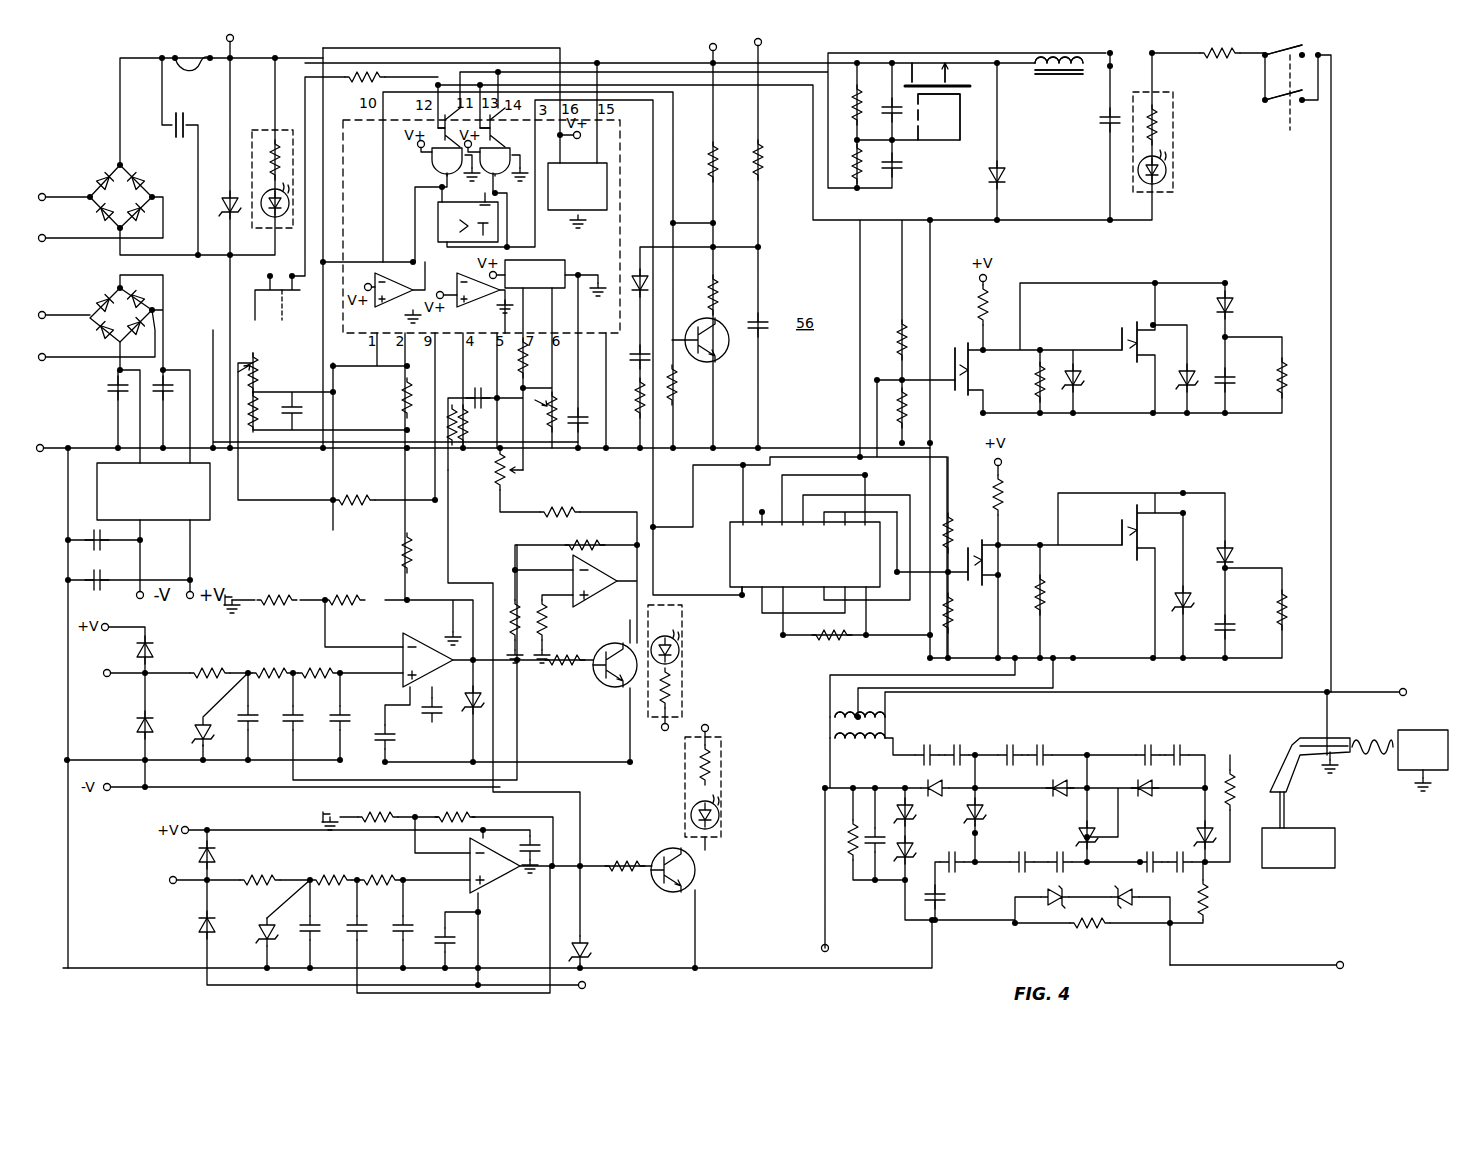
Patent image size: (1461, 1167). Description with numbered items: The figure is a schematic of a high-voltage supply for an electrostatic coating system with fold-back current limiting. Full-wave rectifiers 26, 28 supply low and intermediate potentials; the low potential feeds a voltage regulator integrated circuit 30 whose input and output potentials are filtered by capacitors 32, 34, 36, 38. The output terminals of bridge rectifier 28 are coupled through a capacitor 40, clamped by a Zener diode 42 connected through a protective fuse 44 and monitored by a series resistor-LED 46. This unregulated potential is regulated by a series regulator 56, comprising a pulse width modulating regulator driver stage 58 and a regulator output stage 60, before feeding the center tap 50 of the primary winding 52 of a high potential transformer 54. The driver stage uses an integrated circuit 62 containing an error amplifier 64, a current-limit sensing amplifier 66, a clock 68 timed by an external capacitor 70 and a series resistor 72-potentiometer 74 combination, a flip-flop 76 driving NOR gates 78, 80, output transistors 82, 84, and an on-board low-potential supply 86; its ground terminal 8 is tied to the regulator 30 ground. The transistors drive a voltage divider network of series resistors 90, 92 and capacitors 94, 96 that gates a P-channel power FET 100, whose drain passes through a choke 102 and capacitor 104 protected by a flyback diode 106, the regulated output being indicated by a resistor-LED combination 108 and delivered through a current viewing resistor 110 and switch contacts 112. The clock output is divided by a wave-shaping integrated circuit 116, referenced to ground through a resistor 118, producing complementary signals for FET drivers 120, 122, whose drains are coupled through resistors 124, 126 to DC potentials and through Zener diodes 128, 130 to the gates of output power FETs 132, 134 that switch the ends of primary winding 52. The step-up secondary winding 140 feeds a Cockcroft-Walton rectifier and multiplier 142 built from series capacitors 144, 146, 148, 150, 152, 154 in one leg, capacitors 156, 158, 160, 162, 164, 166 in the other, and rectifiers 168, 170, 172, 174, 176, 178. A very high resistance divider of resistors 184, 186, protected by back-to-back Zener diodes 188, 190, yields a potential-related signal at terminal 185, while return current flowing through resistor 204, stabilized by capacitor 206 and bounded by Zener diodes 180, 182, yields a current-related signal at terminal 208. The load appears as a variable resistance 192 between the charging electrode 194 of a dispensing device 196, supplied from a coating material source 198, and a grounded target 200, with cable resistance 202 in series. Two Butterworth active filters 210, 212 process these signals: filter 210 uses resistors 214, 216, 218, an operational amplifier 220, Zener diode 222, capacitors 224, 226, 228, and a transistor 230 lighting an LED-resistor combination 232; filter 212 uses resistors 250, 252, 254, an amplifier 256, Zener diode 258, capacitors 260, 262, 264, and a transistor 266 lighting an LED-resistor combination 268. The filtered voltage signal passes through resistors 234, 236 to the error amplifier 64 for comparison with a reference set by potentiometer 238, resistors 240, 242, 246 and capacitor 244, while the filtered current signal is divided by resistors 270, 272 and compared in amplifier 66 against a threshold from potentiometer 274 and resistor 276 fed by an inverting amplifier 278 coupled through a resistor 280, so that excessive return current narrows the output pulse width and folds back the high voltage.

The full-wave rectifier 26 is at (87, 294).
The full-wave bridge rectifier 28 is at (103, 153).
The voltage regulator integrated circuit 30 is at (227, 511).
The capacitor 32 is at (165, 400).
The capacitor 34 is at (110, 400).
The capacitor 36 is at (102, 580).
The capacitor 38 is at (90, 531).
The capacitor 40 is at (176, 138).
The Zener diode 42 is at (225, 195).
The protective fuse 44 is at (177, 54).
The series resistor-LED 46 is at (261, 122).
The center tap 50 is at (858, 704).
The primary winding 52 is at (883, 699).
The high potential transformer 54 is at (817, 719).
The series regulator 56 is at (758, 325).
The pulse width modulating regulator driver stage 58 is at (773, 266).
The regulator output stage 60 is at (868, 246).
The integrated circuit 62 is at (624, 182).
The error amplifier 64 is at (388, 280).
The current-limit sensing amplifier 66 is at (470, 280).
The oscillator or clock 68 is at (560, 272).
The time constant determining capacitor 70 is at (584, 409).
The series resistor 72 is at (533, 359).
The potentiometer 74 is at (562, 410).
The flip-flop 76 is at (436, 228).
The NOR gate 78 is at (440, 168).
The NOR gate 80 is at (510, 158).
The output transistor 82 is at (432, 120).
The output transistor 84 is at (505, 125).
The on-board low-potential supply 86 is at (577, 186).
The series resistor 90 is at (867, 98).
The series resistor 92 is at (867, 163).
The series capacitor 94 is at (888, 116).
The series capacitor 96 is at (897, 172).
The P-channel power FET 100 is at (940, 105).
The choke 102 is at (1053, 100).
The capacitor 104 is at (1100, 135).
The flyback diode 106 is at (1008, 167).
The series resistor-LED combination 108 is at (1186, 169).
The current viewing resistor 110 is at (1224, 62).
The switch contacts 112 is at (1271, 110).
The dividing and wave-shaping integrated circuit 116 is at (702, 570).
The resistor 118 is at (825, 651).
The power FET driver 120 is at (950, 325).
The power FET driver 122 is at (977, 525).
The resistor 124 is at (990, 312).
The resistor 126 is at (985, 477).
The voltage-regulating Zener diode 128 is at (1083, 384).
The voltage-regulating Zener diode 130 is at (1082, 606).
The output N-channel power FET 132 is at (1113, 323).
The output N-channel power FET 134 is at (1116, 520).
The step-up secondary winding 140 is at (846, 753).
The high potential rectifier and multiplier 142 is at (1095, 737).
The series capacitor 144 is at (926, 744).
The series capacitor 146 is at (962, 744).
The series capacitor 148 is at (1014, 744).
The series capacitor 150 is at (1046, 746).
The series capacitor 152 is at (1144, 744).
The series capacitor 154 is at (1182, 744).
The series capacitor 156 is at (942, 900).
The series capacitor 158 is at (958, 872).
The series capacitor 160 is at (1028, 872).
The series capacitor 162 is at (1054, 855).
The series capacitor 164 is at (1144, 856).
The series capacitor 166 is at (1176, 872).
The rectifier diode 168 is at (1192, 836).
The rectifier diode 170 is at (1152, 788).
The rectifier diode 172 is at (1100, 834).
The rectifier diode 174 is at (1048, 776).
The rectifier diode 176 is at (984, 815).
The rectifier diode 178 is at (928, 784).
The Zener diode 180 is at (913, 820).
The Zener diode 182 is at (912, 852).
The resistor 184 is at (1212, 888).
The terminal 185 is at (106, 673).
The resistor 186 is at (1108, 908).
The Zener diode 188 is at (1052, 906).
The Zener diode 190 is at (1124, 890).
The load resistance 192 is at (1373, 738).
The charging electrode 194 is at (1345, 738).
The dispensing device 196 is at (1275, 732).
The coating material source 198 is at (1295, 868).
The grounded target 200 is at (1423, 760).
The cable resistance 202 is at (1236, 793).
The resistor 204 is at (840, 838).
The capacitor 206 is at (870, 870).
The terminal 208 is at (170, 881).
The active filter 210 is at (124, 750).
The active filter 212 is at (121, 916).
The series resistor 214 is at (200, 682).
The series resistor 216 is at (274, 670).
The series resistor 218 is at (326, 670).
The operational amplifier 220 is at (403, 664).
The protective Zener diode 222 is at (202, 726).
The capacitor 224 is at (254, 722).
The capacitor 226 is at (345, 713).
The feedback capacitor 228 is at (300, 722).
The transistor 230 is at (598, 675).
The series LED-resistor combination 232 is at (696, 702).
The resistor 234 is at (400, 550).
The resistor 236 is at (400, 401).
The potentiometer 238 is at (262, 378).
The resistor 240 is at (268, 407).
The resistor 242 is at (351, 509).
The capacitor 244 is at (672, 370).
The resistor 246 is at (648, 412).
The series resistor 250 is at (264, 872).
The series resistor 252 is at (334, 872).
The series resistor 254 is at (390, 876).
The amplifier 256 is at (497, 886).
The protective Zener diode 258 is at (258, 920).
The capacitor 260 is at (323, 921).
The capacitor 262 is at (408, 918).
The feedback capacitor 264 is at (352, 935).
The transistor 266 is at (668, 892).
The series LED-resistor combination 268 is at (675, 793).
The resistor 270 is at (470, 432).
The resistor 272 is at (468, 416).
The potentiometer 274 is at (496, 478).
The resistor 276 is at (556, 508).
The inverting amplifier 278 is at (614, 598).
The resistor 280 is at (563, 590).
The ground terminal 8 is at (580, 340).